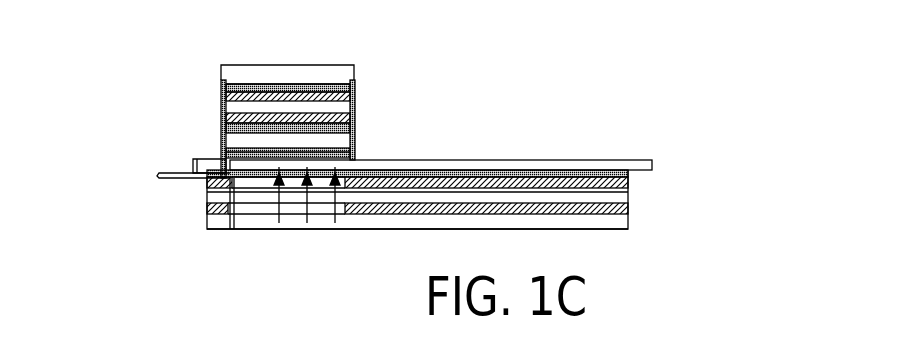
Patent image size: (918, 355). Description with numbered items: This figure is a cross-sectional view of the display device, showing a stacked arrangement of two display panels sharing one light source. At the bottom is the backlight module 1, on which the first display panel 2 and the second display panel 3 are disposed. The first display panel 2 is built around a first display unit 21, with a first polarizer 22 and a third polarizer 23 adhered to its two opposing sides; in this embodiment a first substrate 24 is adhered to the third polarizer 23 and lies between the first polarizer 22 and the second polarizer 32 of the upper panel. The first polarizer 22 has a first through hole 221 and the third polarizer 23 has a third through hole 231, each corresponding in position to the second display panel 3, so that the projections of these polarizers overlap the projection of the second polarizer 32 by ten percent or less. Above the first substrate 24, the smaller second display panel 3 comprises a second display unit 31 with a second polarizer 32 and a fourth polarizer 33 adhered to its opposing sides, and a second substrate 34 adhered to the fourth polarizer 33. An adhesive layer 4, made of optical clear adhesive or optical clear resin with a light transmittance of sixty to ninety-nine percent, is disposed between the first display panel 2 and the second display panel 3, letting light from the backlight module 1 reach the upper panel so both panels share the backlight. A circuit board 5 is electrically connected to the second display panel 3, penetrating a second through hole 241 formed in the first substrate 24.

The backlight module 1 is at (228, 222).
The first display panel 2 is at (479, 200).
The first display unit 21 is at (628, 204).
The first polarizer 22 is at (456, 234).
The third polarizer 23 is at (630, 181).
The first substrate 24 is at (648, 163).
The first through hole 221 is at (273, 207).
The third through hole 231 is at (347, 213).
The second through hole 241 is at (233, 218).
The second display panel 3 is at (258, 116).
The second display unit 31 is at (225, 104).
The second polarizer 32 is at (226, 108).
The fourth polarizer 33 is at (226, 99).
The second substrate 34 is at (233, 72).
The adhesive layer 4 is at (354, 152).
The circuit board 5 is at (158, 175).